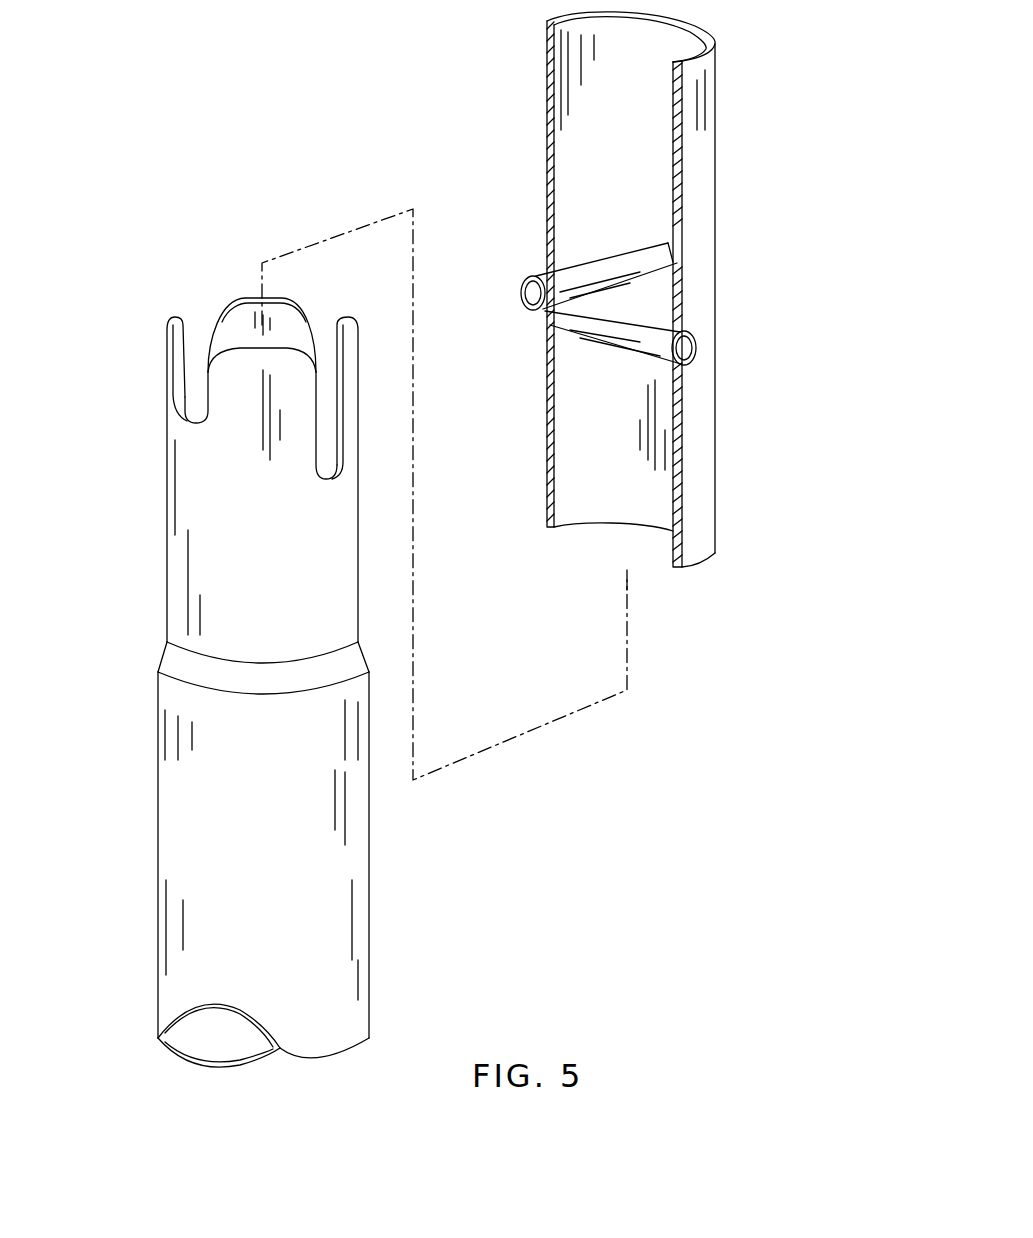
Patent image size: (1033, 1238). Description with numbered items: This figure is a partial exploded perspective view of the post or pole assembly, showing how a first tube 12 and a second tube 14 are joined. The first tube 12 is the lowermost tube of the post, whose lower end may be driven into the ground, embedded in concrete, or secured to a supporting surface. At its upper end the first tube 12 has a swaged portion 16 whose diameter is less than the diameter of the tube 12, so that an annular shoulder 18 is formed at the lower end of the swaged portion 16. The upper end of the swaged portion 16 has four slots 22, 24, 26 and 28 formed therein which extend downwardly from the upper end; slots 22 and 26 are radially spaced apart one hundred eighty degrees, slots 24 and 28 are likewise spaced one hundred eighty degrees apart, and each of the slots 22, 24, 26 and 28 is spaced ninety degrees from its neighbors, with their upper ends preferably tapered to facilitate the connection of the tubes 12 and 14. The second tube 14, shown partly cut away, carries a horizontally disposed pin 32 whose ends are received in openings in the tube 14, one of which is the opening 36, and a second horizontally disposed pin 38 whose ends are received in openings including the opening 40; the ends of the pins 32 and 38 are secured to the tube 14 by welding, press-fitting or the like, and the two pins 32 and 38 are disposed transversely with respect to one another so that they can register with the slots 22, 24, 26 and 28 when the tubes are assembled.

The first tube 12 is at (143, 783).
The second tube 14 is at (157, 468).
The swaged portion 16 is at (207, 567).
The annular shoulder 18 is at (158, 670).
The slot 22 is at (197, 330).
The slot 24 is at (322, 325).
The slot 26 is at (325, 452).
The slot 28 is at (197, 390).
The pin 32 is at (590, 327).
The opening 36 is at (693, 333).
The pin 38 is at (598, 268).
The opening 40 is at (550, 267).